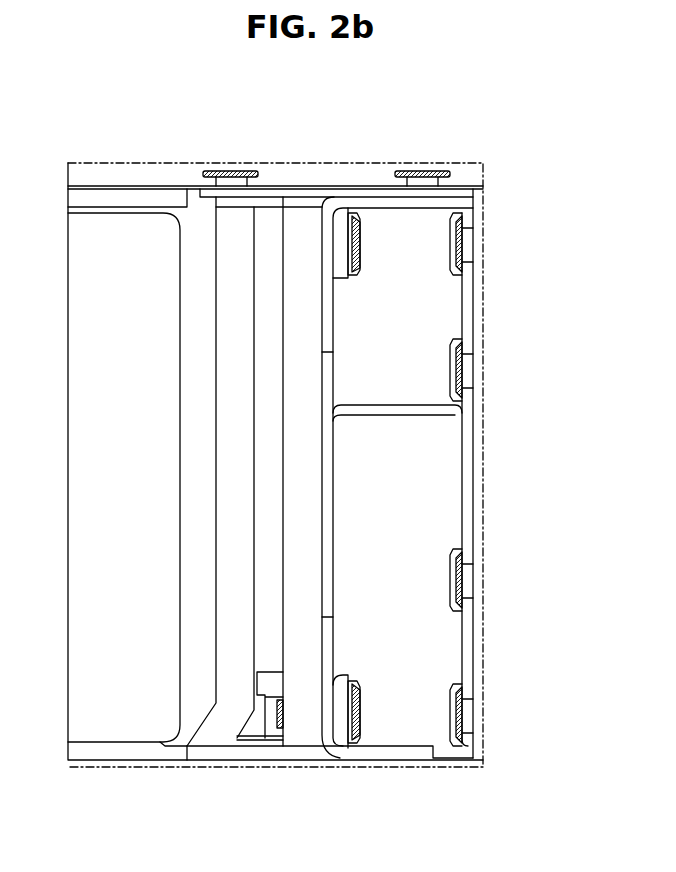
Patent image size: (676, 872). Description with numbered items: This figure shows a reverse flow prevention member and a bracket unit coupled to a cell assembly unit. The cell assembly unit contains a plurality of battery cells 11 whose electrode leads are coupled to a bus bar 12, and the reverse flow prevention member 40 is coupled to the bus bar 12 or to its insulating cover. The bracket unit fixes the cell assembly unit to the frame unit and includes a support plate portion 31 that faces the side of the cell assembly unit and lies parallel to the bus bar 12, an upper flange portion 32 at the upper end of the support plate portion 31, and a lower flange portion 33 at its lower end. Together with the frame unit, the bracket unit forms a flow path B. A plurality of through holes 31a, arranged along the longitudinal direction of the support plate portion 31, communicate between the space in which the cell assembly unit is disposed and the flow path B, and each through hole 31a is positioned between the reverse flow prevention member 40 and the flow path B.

The battery cell 11 is at (115, 733).
The bus bar 12 is at (258, 662).
The support plate portion 31 is at (333, 643).
The through hole 31a is at (333, 531).
The upper flange portion 32 is at (365, 186).
The lower flange portion 33 is at (360, 747).
The reverse flow prevention member 40 is at (299, 737).
The flow path B is at (408, 722).